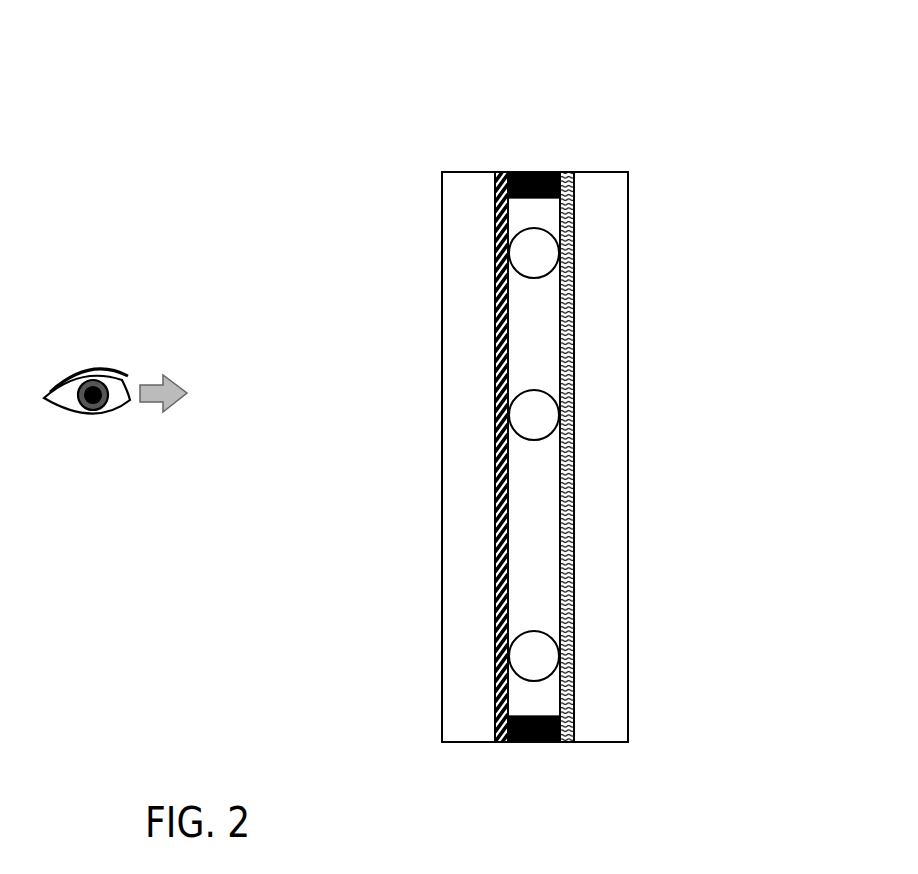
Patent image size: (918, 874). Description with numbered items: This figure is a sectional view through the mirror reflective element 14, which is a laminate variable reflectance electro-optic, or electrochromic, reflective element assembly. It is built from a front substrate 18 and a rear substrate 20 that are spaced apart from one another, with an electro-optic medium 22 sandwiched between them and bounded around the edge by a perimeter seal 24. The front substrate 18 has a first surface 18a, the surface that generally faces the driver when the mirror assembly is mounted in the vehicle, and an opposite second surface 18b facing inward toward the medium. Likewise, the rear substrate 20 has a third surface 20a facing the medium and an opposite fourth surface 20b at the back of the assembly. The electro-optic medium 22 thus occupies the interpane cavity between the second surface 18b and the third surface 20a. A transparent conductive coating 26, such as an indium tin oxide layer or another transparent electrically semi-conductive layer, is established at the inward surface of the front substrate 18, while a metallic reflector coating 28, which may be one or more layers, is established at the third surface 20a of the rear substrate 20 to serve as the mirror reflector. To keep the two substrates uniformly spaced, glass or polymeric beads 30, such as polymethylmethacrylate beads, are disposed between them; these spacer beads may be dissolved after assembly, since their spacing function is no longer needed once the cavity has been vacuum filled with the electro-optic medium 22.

The mirror reflective element 14 is at (328, 113).
The front substrate 18 is at (466, 487).
The first surface 18a is at (444, 358).
The second surface 18b is at (503, 617).
The rear substrate 20 is at (616, 423).
The third surface 20a is at (575, 349).
The fourth surface 20b is at (628, 244).
The electro-optic medium 22 is at (532, 305).
The perimeter seal 24 is at (535, 172).
The transparent conductive coating 26 is at (503, 538).
The metallic reflector coating 28 is at (575, 495).
The beads 30 is at (547, 668).